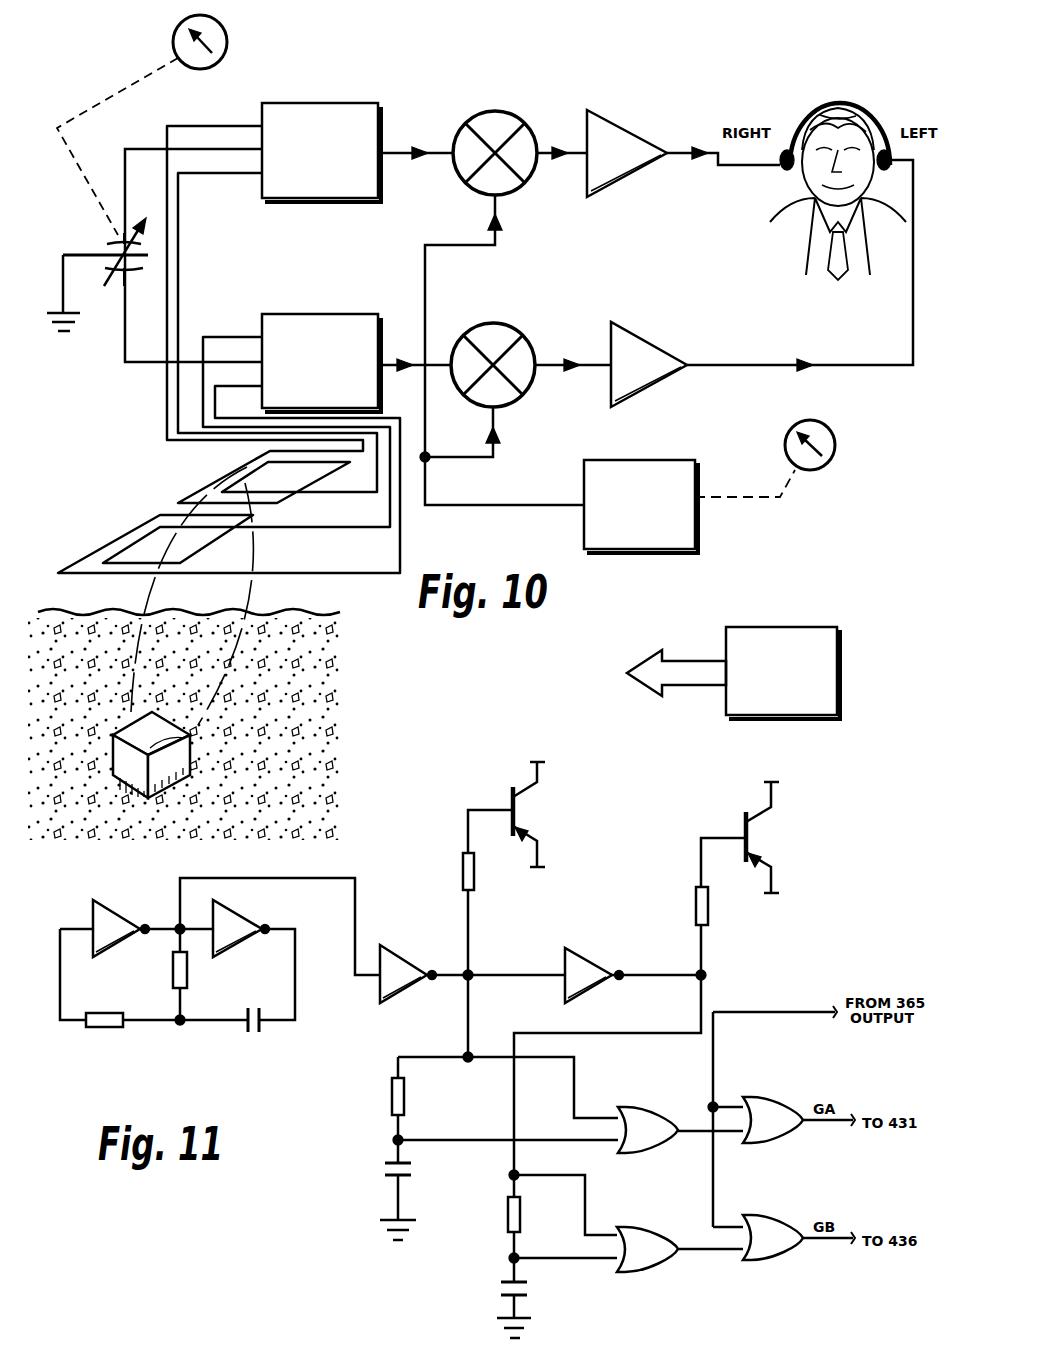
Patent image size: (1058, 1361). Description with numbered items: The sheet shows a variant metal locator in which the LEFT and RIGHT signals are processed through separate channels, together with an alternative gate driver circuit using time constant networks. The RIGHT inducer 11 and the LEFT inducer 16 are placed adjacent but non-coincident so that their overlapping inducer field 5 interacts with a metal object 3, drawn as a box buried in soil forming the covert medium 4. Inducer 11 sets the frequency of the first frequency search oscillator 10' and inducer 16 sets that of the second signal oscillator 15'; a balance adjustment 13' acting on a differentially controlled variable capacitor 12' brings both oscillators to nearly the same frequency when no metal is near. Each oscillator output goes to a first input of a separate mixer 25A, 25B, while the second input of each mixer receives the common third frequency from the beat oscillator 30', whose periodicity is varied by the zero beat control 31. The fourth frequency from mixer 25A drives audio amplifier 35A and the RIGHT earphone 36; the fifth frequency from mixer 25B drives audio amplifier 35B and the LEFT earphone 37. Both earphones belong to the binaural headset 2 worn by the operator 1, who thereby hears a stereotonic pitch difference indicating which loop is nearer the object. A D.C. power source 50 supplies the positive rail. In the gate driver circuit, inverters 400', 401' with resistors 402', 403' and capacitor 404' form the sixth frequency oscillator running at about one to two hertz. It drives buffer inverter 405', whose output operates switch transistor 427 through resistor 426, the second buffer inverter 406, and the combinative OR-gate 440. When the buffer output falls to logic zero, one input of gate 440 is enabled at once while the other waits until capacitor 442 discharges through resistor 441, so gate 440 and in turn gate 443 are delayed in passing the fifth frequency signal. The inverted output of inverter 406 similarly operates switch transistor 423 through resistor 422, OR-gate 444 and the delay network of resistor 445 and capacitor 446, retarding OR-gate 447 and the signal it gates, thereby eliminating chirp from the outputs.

In FIG. 10, the balance adjustment 13' is at (191, 118).
In FIG. 10, the differentially controlled variable capacitor 12' is at (97, 243).
In FIG. 10, the first frequency signal search oscillator 10' is at (321, 131).
In FIG. 10, the second signal oscillator 15' is at (321, 342).
In FIG. 10, the first inducer loop 11 is at (280, 478).
In FIG. 10, the second inducer 16 is at (165, 538).
In FIG. 10, the overlapping inducer field 5 is at (265, 562).
In FIG. 10, the covert medium 4 is at (318, 690).
In FIG. 10, the metal object 3 is at (138, 758).
In FIG. 10, the mixer 25A is at (523, 150).
In FIG. 10, the mixer 25B is at (515, 360).
In FIG. 10, the audio amplifier 35A is at (633, 160).
In FIG. 10, the audio amplifier 35B is at (655, 370).
In FIG. 10, the operator 1 is at (820, 225).
In FIG. 10, the binaural headset 2 is at (872, 113).
In FIG. 10, the RIGHT earphone 36 is at (783, 152).
In FIG. 10, the LEFT earphone 37 is at (889, 168).
In FIG. 10, the beat oscillator 30' is at (641, 486).
In FIG. 10, the zero beat control 31 is at (793, 443).
In FIG. 10, the D.C. power source 50 is at (790, 650).
In FIG. 11, the inverter 401' is at (122, 915).
In FIG. 11, the inverter 400' is at (246, 919).
In FIG. 11, the resistor 402' is at (202, 972).
In FIG. 11, the resistor 403' is at (95, 1034).
In FIG. 11, the capacitor 404' is at (237, 1032).
In FIG. 11, the buffer inverter 405' is at (410, 961).
In FIG. 11, the second buffer inverter 406 is at (581, 969).
In FIG. 11, the resistor 426 is at (463, 868).
In FIG. 11, the switch transistor 427 is at (522, 813).
In FIG. 11, the resistor 422 is at (697, 918).
In FIG. 11, the switch transistor 423 is at (757, 840).
In FIG. 11, the resistor 441 is at (393, 1104).
In FIG. 11, the capacitor 442 is at (380, 1170).
In FIG. 11, the resistor 445 is at (510, 1220).
In FIG. 11, the capacitor 446 is at (498, 1291).
In FIG. 11, the OR-gate 440 is at (640, 1123).
In FIG. 11, the OR-gate 444 is at (637, 1243).
In FIG. 11, the gate 443 is at (777, 1121).
In FIG. 11, the OR-gate 447 is at (768, 1236).